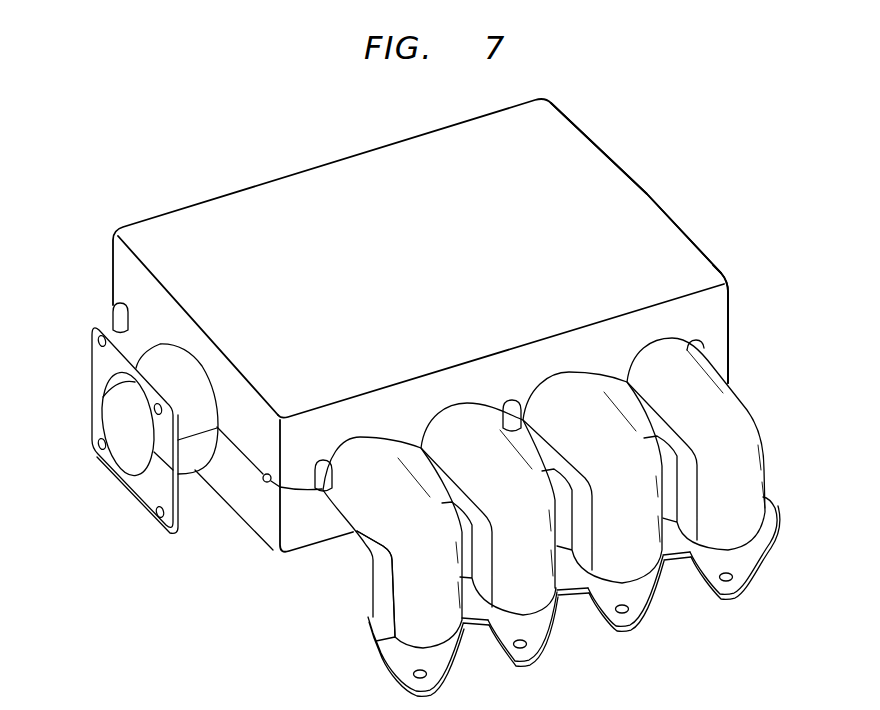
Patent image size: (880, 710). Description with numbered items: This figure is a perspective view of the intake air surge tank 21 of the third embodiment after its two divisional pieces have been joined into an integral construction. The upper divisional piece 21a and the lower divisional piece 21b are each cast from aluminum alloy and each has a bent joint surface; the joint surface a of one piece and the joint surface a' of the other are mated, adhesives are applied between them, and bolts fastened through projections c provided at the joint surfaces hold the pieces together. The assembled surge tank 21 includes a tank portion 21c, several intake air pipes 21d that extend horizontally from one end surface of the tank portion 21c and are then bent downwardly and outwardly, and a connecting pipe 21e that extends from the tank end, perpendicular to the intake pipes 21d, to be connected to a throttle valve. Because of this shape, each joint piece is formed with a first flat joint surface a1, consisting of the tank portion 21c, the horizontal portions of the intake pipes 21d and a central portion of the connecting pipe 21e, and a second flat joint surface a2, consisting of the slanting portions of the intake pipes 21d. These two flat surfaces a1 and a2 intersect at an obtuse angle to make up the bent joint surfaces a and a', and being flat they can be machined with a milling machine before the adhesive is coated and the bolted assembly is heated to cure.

The intake air surge tank 21 is at (609, 147).
The upper divisional piece 21a is at (645, 196).
The tank portion 21c is at (682, 244).
The connecting pipe 21e is at (195, 377).
The lower divisional piece 21b is at (729, 379).
The intake air pipe 21d is at (752, 438).
The bent joint surface a is at (498, 415).
The first flat joint surface a1 is at (195, 338).
The second joint surface a2 is at (390, 588).
The bent joint surface a' is at (244, 475).
The projection c is at (113, 311).